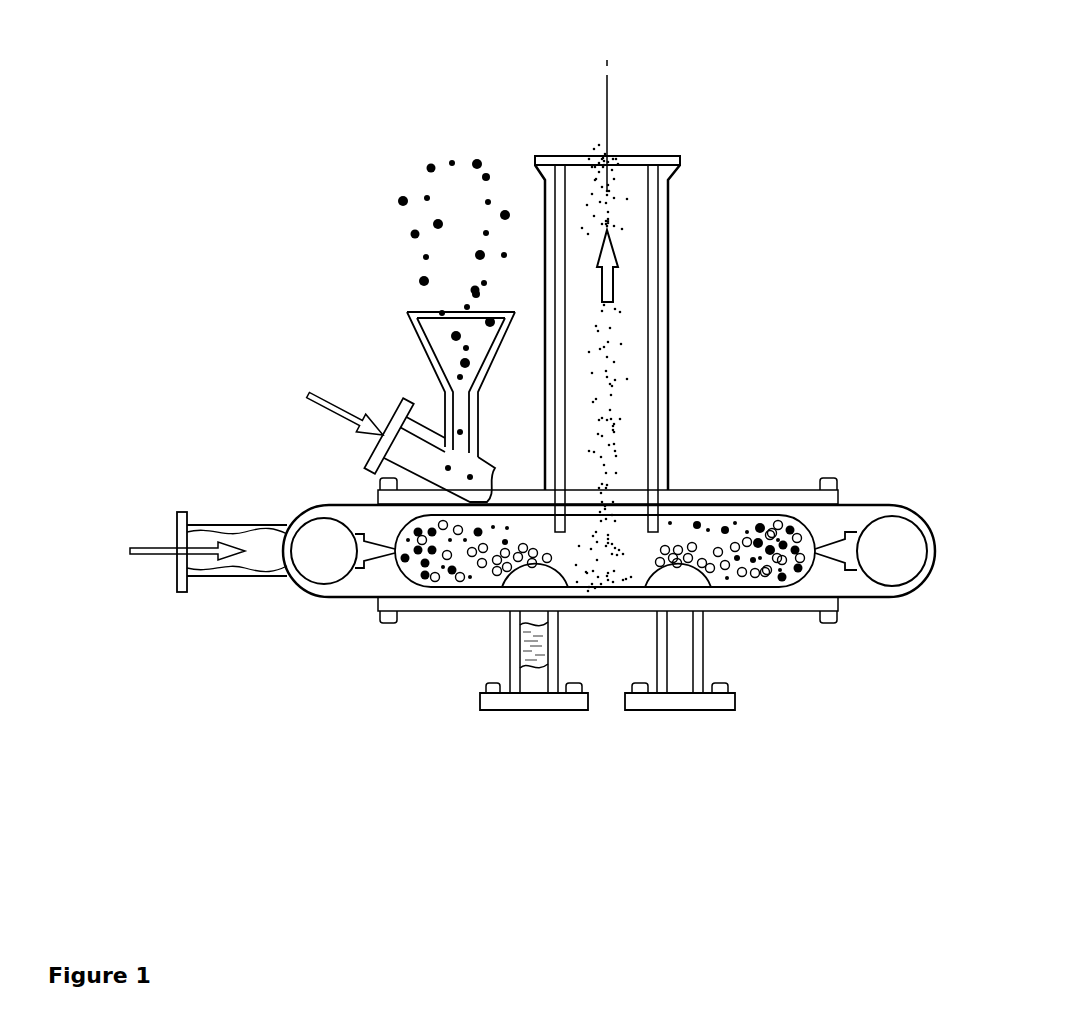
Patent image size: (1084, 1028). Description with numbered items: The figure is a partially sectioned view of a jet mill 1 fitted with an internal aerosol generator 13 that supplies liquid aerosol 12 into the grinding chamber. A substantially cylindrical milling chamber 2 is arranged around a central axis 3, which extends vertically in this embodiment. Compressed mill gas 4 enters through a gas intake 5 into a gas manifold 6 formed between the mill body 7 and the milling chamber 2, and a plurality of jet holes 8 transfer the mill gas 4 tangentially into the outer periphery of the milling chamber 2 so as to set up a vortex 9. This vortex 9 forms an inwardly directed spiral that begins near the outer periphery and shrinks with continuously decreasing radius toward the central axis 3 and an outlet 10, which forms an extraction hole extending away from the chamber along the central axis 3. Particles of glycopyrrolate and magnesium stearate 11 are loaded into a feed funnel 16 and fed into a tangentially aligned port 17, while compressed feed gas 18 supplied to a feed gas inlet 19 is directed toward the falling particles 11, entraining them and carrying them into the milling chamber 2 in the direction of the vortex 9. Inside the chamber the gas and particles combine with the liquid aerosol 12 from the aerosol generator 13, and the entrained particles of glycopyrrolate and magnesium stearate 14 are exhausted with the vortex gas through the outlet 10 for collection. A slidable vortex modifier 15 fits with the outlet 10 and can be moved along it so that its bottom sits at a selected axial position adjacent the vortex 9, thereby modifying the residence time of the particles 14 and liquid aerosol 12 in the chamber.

The jet mill 1 is at (755, 290).
The milling chamber 2 is at (812, 530).
The central axis 3 is at (613, 125).
The compressed mill gas 4 is at (169, 554).
The gas intake 5 is at (203, 563).
The gas manifold 6 is at (262, 557).
The mill body 7 is at (371, 582).
The jet holes 8 is at (822, 566).
The vortex 9 is at (613, 552).
The outlet 10 is at (672, 403).
The particles of glycopyrrolate and magnesium stearate 11 is at (397, 200).
The liquid aerosol 12 is at (480, 573).
The aerosol generator 13 is at (535, 578).
The entrained particles of glycopyrrolate and magnesium stearate 14 is at (615, 458).
The slidable vortex modifier 15 is at (650, 353).
The feed funnel 16 is at (413, 347).
The port 17 is at (480, 484).
The compressed feed gas 18 is at (328, 401).
The feed gas inlet 19 is at (407, 447).